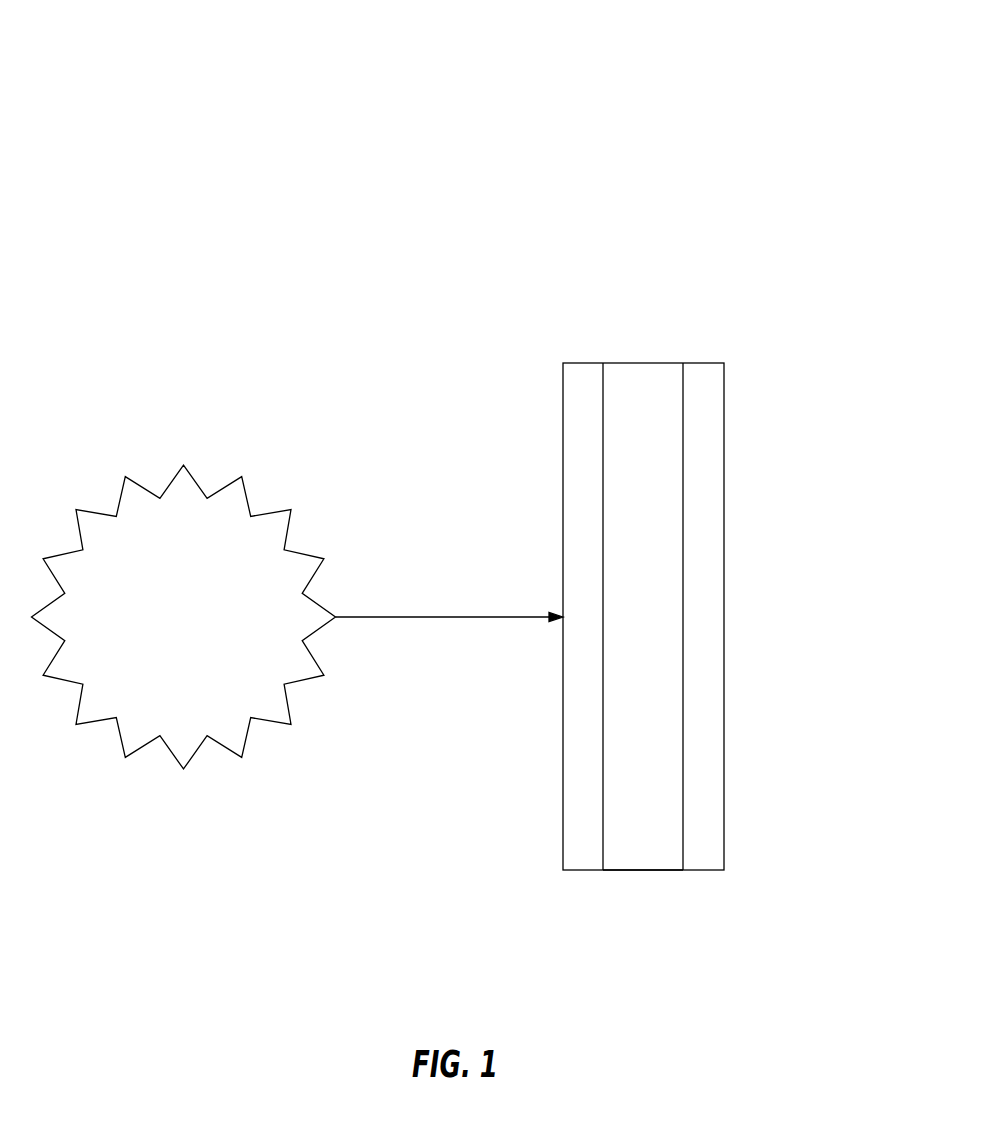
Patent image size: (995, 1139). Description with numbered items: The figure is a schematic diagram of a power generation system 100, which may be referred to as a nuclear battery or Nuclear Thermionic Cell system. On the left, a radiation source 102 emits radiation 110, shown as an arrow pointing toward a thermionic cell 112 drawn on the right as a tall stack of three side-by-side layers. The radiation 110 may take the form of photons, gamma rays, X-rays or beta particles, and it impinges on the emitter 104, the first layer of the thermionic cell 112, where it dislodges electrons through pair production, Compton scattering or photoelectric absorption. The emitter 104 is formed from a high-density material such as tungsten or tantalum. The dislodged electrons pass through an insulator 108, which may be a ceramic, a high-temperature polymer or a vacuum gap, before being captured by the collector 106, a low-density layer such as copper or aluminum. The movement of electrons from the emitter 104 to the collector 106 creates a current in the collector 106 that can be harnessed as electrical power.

The power generation system 100 is at (720, 80).
The radiation source 102 is at (198, 628).
The emitter 104 is at (585, 363).
The collector 106 is at (705, 363).
The insulator 108 is at (645, 870).
The radiation 110 is at (452, 612).
The thermionic cell 112 is at (763, 363).